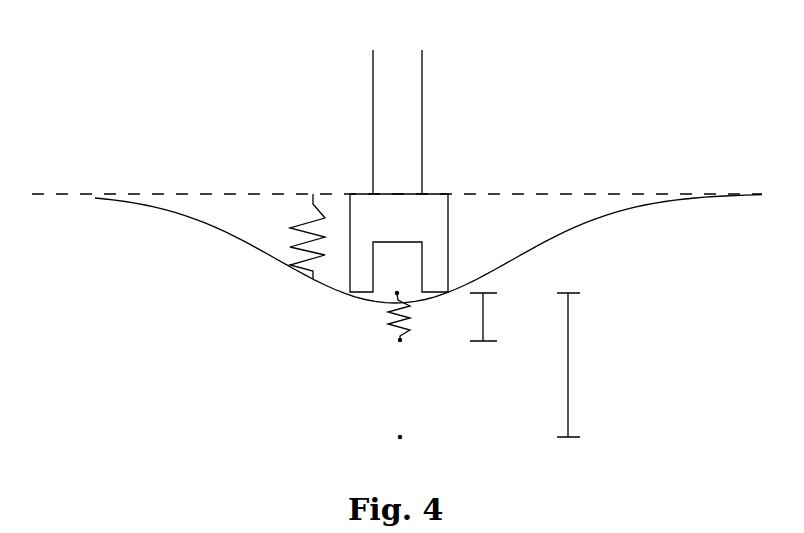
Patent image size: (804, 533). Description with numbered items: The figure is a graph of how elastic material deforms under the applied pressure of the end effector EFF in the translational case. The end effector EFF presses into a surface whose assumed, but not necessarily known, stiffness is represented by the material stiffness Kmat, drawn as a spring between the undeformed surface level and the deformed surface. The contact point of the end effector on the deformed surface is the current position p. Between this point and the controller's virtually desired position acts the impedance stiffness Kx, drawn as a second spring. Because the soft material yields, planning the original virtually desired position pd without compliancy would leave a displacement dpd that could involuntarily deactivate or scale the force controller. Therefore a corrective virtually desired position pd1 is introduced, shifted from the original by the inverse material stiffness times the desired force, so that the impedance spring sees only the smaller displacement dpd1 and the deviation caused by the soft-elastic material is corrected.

The end effector EFF is at (457, 210).
The material stiffness Kmat is at (262, 236).
The impedance stiffness Kx is at (367, 317).
The current position p is at (404, 280).
The corrective virtually desired position pd1 is at (420, 342).
The virtually desired position pd is at (417, 435).
The corrective desired position displacement dpd1 is at (500, 328).
The desired position displacement dpd is at (585, 378).